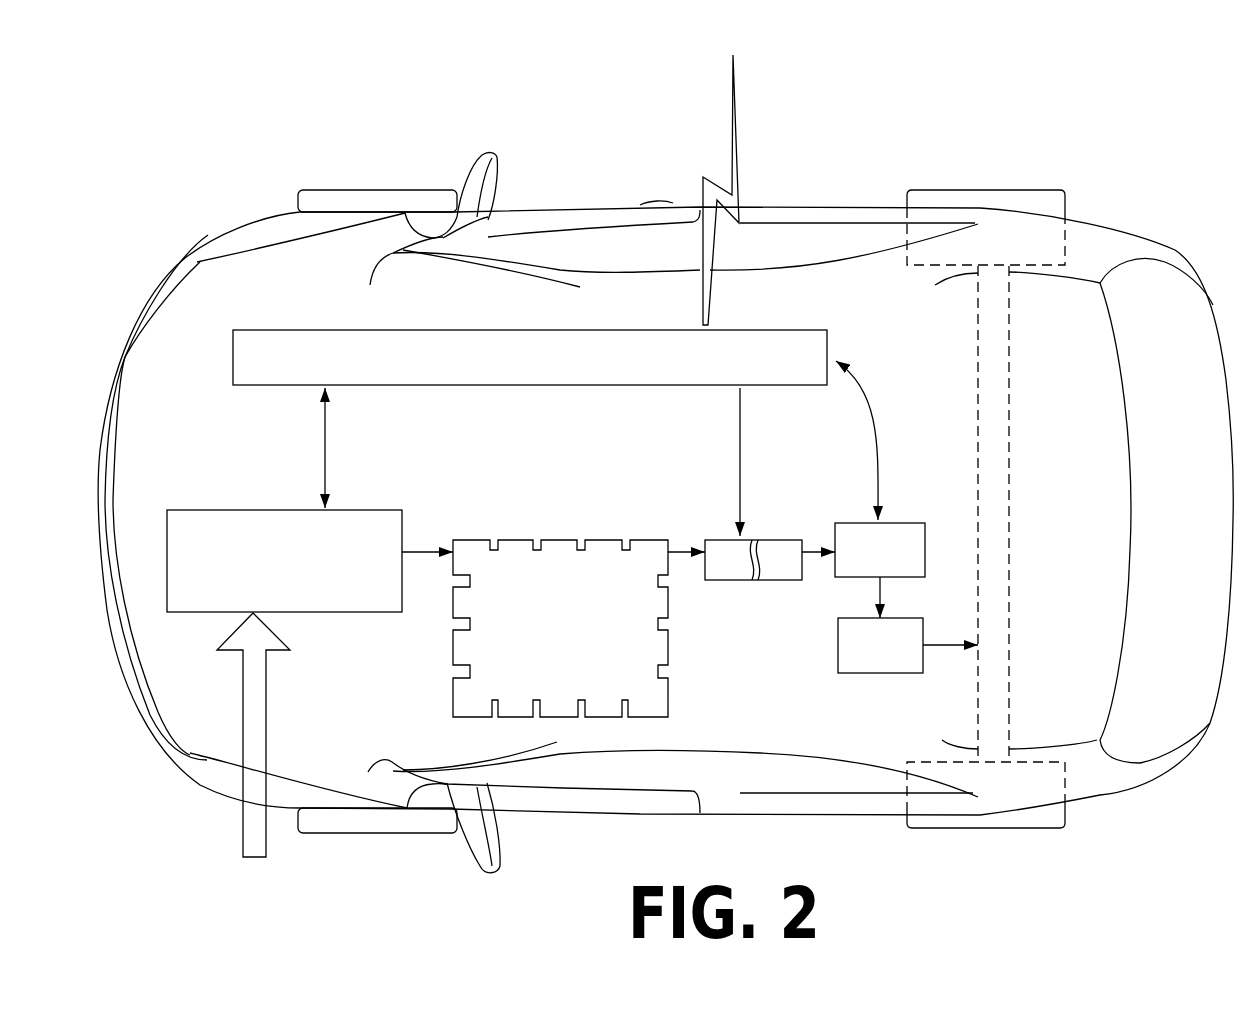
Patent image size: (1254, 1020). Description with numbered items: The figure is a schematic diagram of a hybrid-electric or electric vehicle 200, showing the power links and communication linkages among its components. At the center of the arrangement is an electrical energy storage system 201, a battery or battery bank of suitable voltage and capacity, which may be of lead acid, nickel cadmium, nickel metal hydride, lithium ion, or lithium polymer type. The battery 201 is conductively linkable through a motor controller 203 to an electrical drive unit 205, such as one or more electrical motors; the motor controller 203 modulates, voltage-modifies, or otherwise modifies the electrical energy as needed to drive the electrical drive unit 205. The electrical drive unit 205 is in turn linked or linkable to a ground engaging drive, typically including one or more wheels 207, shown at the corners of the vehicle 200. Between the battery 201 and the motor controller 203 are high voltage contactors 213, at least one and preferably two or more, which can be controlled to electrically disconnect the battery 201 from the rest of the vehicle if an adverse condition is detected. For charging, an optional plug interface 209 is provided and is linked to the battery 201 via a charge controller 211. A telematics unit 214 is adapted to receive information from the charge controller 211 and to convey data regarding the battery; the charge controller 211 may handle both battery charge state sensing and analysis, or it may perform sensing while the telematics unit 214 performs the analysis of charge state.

The vehicle 200 is at (790, 183).
The electrical energy storage system 201 is at (560, 628).
The motor controller 203 is at (880, 550).
The electrical drive unit 205 is at (880, 645).
The wheels 207 is at (998, 205).
The plug interface 209 is at (242, 858).
The charge controller 211 is at (284, 561).
The high voltage contactors 213 is at (728, 538).
The telematics unit 214 is at (530, 357).